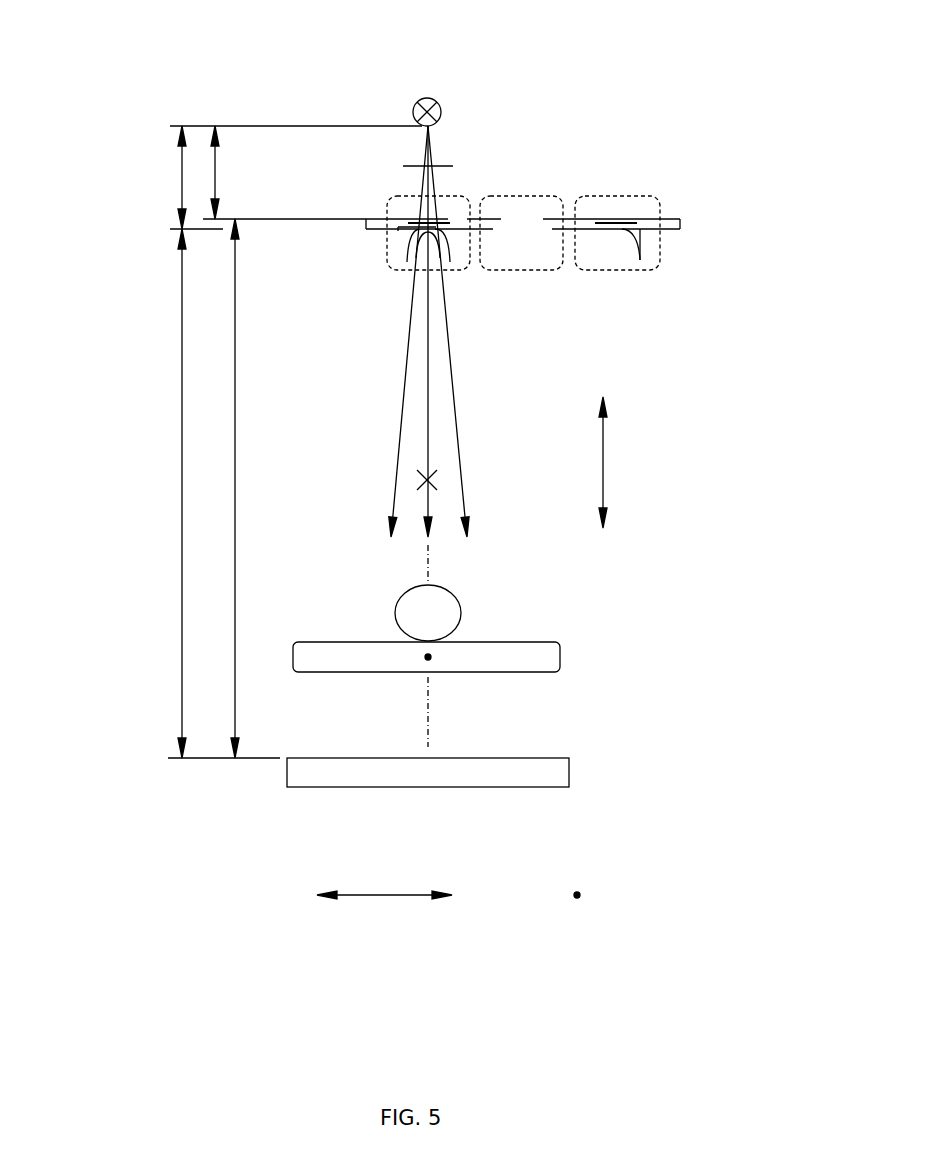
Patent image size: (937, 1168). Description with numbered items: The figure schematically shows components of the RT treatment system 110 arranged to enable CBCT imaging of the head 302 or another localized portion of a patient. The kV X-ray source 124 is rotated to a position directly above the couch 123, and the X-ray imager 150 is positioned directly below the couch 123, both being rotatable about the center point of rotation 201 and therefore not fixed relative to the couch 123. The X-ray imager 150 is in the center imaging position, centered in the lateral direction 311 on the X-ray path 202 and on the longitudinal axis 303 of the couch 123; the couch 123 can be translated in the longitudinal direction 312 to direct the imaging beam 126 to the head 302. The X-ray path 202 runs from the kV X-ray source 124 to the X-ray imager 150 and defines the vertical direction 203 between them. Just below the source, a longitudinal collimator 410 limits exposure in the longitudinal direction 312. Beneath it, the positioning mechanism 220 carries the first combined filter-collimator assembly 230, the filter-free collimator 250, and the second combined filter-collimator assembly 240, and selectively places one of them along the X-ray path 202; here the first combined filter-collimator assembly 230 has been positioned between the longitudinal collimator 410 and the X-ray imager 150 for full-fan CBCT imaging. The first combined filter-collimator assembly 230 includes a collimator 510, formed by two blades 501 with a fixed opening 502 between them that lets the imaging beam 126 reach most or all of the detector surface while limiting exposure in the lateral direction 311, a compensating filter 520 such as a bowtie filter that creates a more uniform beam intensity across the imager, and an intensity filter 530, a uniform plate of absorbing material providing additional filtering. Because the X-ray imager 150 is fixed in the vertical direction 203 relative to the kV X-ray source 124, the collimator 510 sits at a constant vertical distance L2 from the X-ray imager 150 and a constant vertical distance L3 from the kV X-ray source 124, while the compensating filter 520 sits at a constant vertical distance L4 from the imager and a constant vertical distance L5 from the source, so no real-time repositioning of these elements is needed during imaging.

The RT treatment system 110 is at (88, 65).
The kV X-ray source 124 is at (417, 103).
The imaging beam 126 is at (405, 332).
The longitudinal collimator 410 is at (370, 148).
The opening 502 is at (445, 200).
The collimator 510 is at (434, 198).
The blades 501 is at (403, 218).
The intensity filter 530 is at (402, 228).
The compensating filter 520 is at (392, 252).
The first combined filter-collimator assembly 230 is at (386, 289).
The positioning mechanism 220 is at (682, 223).
The filter-free collimator 250 is at (510, 272).
The second combined filter-collimator assembly 240 is at (613, 272).
The center point of rotation 201 is at (390, 478).
The vertical direction 203 is at (603, 462).
The X-ray path 202 is at (427, 730).
The head 302 is at (408, 626).
The couch 123 is at (362, 668).
The longitudinal axis 303 is at (429, 660).
The X-ray imager 150 is at (490, 788).
The lateral direction 311 is at (383, 895).
The longitudinal direction 312 is at (577, 898).
The vertical distance L2 is at (235, 445).
The vertical distance L3 is at (215, 178).
The vertical distance L4 is at (182, 437).
The vertical distance L5 is at (182, 178).